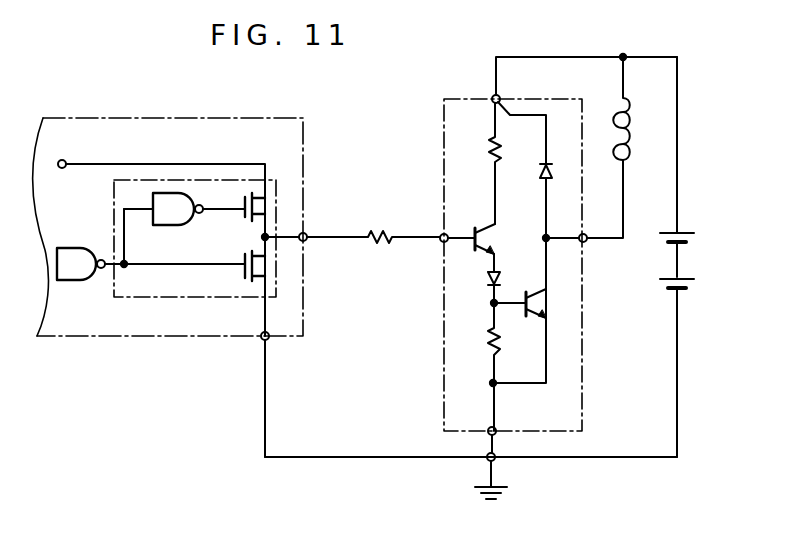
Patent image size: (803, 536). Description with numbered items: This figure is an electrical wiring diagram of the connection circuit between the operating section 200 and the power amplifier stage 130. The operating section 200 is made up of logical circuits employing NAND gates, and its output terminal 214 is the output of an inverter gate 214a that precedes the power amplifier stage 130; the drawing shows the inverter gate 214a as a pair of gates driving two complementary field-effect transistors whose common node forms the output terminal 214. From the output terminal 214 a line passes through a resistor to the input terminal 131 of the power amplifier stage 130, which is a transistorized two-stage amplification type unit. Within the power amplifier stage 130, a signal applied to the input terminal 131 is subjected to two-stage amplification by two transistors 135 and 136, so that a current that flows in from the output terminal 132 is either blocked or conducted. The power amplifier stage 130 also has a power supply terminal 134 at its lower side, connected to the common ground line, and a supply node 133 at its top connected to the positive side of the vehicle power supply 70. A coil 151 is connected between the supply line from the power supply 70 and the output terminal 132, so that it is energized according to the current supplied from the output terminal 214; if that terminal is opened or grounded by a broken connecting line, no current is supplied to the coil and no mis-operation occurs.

The operating section 200 is at (147, 93).
The inverter gate 214a is at (180, 297).
The output terminal 214 is at (313, 213).
The input terminal 131 is at (440, 236).
The power amplifier stage 130 is at (442, 395).
The supply terminal 133 is at (500, 96).
The transistor 135 is at (483, 230).
The transistor 136 is at (531, 304).
The power supply terminal 134 is at (494, 428).
The output terminal 132 is at (586, 241).
The coil (solenoid) 151 is at (628, 122).
The power supply 70 is at (673, 260).